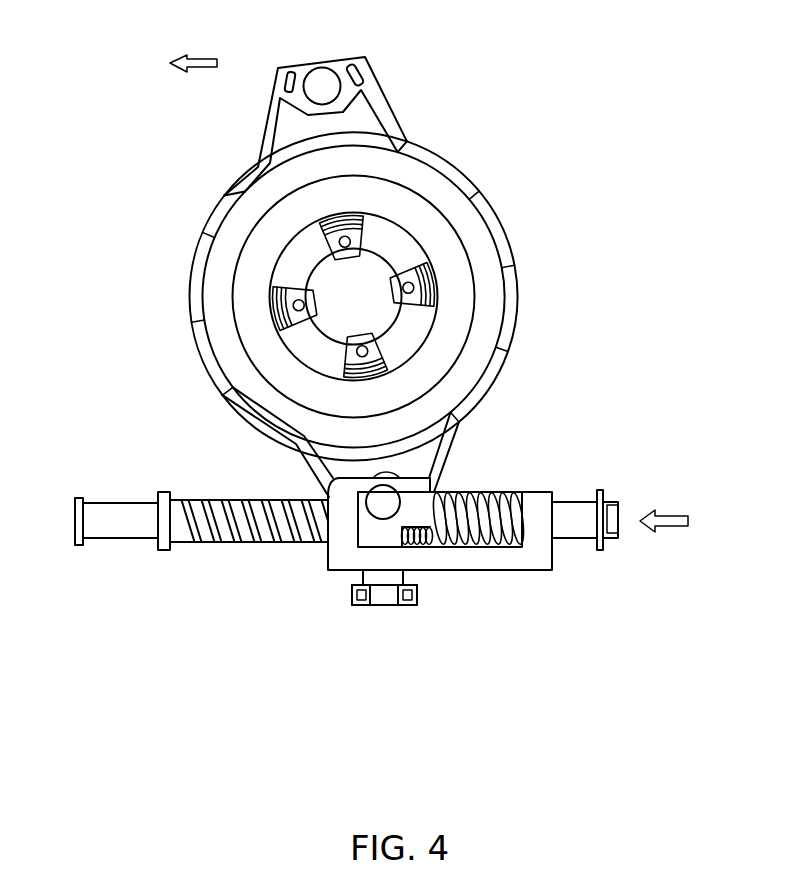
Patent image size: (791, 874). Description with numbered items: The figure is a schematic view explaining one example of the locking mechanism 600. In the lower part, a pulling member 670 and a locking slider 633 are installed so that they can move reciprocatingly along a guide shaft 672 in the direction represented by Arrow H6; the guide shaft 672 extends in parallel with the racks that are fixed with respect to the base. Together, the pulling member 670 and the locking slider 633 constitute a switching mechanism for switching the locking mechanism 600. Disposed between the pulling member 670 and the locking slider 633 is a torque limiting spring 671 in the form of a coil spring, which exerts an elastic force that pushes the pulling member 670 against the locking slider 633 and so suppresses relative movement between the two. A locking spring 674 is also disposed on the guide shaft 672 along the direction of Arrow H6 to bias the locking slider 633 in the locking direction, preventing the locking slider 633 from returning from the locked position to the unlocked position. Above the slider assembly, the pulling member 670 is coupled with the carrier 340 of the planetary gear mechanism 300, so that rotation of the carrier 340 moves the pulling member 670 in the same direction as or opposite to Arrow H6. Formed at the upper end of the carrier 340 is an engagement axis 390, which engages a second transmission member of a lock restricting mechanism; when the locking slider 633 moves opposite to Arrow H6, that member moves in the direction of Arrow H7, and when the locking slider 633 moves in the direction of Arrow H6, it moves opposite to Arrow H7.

The planetary gear mechanism 300 is at (471, 90).
The engagement axis 390 is at (323, 84).
The carrier 340 is at (483, 197).
The locking mechanism 600 is at (635, 630).
The locking spring 674 is at (282, 543).
The locking slider 633 is at (522, 570).
The torque limiting spring 671 is at (467, 548).
The pulling member 670 is at (383, 520).
The guide shaft 672 is at (567, 540).
The Arrow H7 is at (200, 70).
The Arrow H6 is at (668, 528).